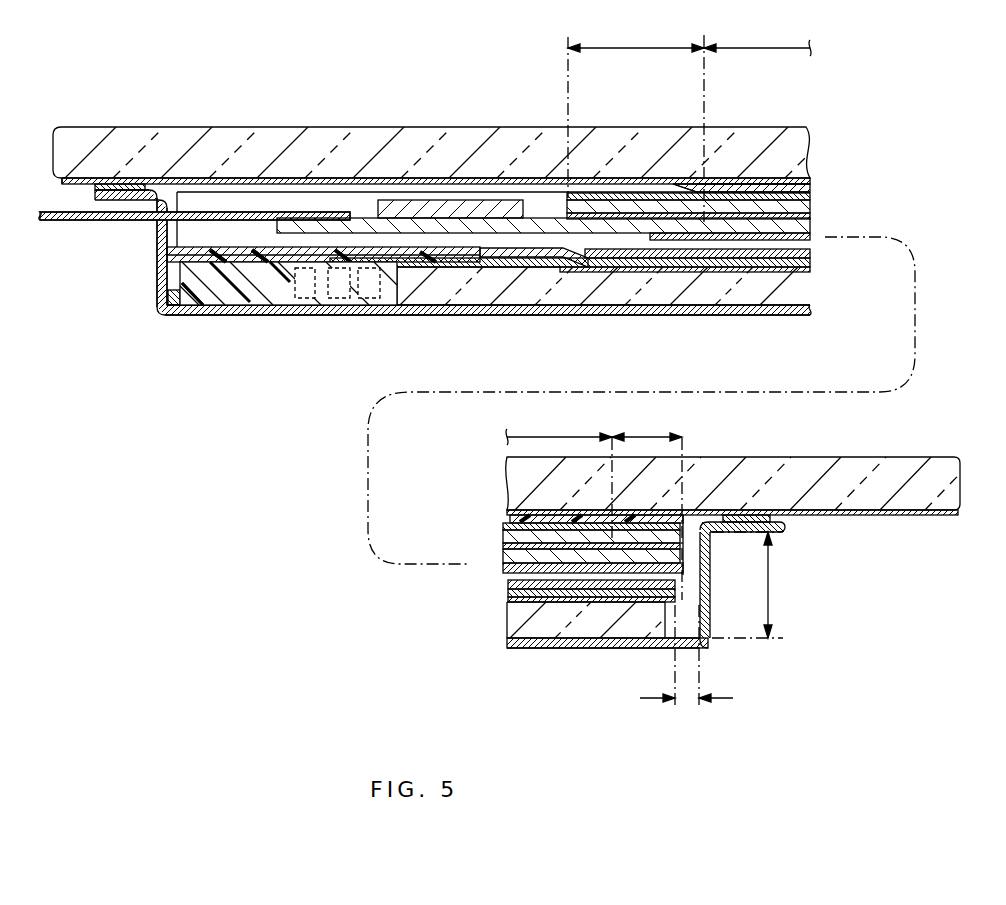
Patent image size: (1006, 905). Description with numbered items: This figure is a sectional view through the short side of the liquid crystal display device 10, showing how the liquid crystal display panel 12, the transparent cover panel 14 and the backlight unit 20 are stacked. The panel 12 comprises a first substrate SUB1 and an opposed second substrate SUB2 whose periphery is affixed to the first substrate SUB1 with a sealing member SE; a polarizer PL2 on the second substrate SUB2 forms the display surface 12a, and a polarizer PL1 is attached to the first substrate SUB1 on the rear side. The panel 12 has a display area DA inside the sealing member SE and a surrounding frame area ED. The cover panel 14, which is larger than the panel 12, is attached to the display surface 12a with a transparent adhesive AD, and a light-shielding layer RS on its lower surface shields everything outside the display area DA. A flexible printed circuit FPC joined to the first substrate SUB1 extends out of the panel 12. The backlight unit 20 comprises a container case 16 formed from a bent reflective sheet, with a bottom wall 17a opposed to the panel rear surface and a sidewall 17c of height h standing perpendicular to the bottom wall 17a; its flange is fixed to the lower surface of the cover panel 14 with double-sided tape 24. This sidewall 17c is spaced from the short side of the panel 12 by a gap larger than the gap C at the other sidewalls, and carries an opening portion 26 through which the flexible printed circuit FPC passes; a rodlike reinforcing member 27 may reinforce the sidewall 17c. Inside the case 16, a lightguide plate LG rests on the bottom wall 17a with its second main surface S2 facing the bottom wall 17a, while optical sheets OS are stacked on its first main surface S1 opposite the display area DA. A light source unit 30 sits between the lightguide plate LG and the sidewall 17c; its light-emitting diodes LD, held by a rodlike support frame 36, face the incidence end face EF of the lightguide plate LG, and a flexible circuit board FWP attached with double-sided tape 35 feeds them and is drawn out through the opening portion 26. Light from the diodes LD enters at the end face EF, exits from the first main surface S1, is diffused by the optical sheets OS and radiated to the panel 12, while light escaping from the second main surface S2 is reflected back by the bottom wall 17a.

The liquid crystal display device 10 is at (270, 95).
The liquid crystal display panel 12 is at (928, 165).
The display surface 12a is at (757, 183).
The cover panel 14 is at (355, 127).
The container case 16 is at (148, 301).
The bottom wall 17a is at (478, 315).
The sidewall 17c is at (157, 270).
The backlight unit 20 is at (822, 247).
The double-sided tape 24 is at (107, 183).
The opening portion 26 is at (166, 190).
The reinforcing member 27 is at (172, 312).
The light source unit 30 is at (307, 318).
The double-sided tape 35 is at (224, 264).
The support frame 36 is at (272, 264).
The light-shielding layer RS is at (66, 178).
The flexible printed circuit FPC is at (207, 212).
The frame area ED is at (636, 110).
The display area DA is at (658, 311).
The sealing member SE is at (640, 205).
The transparent adhesive AD is at (729, 183).
The polarizer PL2 is at (811, 181).
The second substrate SUB2 is at (812, 197).
The first substrate SUB1 is at (812, 228).
The polarizer PL1 is at (672, 240).
The first main surface S1 is at (780, 258).
The second main surface S2 is at (720, 267).
The optical sheets OS is at (503, 602).
The lightguide plate LG is at (615, 300).
The light-emitting diodes LD is at (338, 298).
The incidence end face EF is at (372, 298).
The flexible circuit board FWP is at (208, 300).
The height h is at (750, 585).
The gap C is at (686, 656).